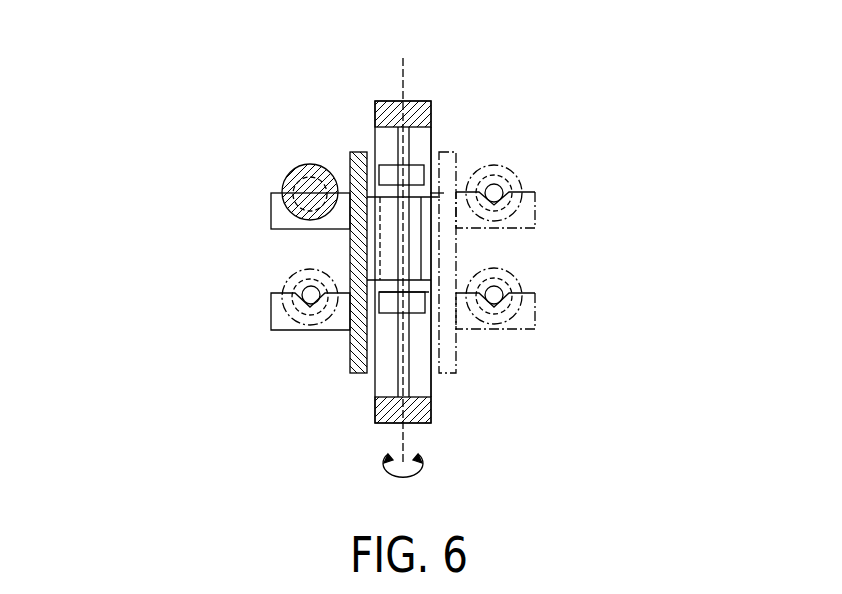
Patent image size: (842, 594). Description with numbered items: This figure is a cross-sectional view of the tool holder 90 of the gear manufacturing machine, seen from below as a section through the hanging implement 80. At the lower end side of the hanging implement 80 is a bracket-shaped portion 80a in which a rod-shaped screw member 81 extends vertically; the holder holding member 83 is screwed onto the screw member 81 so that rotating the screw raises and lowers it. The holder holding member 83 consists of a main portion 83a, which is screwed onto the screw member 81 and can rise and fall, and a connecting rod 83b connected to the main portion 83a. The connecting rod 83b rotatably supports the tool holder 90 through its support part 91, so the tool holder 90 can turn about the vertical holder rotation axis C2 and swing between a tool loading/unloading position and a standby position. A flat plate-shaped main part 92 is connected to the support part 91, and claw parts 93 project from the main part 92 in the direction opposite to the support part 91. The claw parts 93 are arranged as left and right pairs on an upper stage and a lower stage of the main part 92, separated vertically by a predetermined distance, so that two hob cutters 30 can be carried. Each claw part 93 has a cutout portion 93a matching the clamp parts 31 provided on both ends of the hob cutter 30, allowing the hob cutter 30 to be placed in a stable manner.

The hob cutter 30 is at (301, 168).
The clamp part 31 is at (286, 174).
The hanging implement 80 is at (436, 97).
The bracket-shaped portion 80a is at (405, 98).
The screw member 81 is at (431, 143).
The holder holding member 83 is at (397, 38).
The main portion 83a is at (388, 175).
The connecting rod 83b is at (357, 152).
The tool holder 90 is at (175, 210).
The support part 91 is at (387, 270).
The main part 92 is at (348, 243).
The claw part 93 is at (271, 210).
The cutout portion 93a is at (293, 186).
The holder rotation axis C2 is at (416, 465).